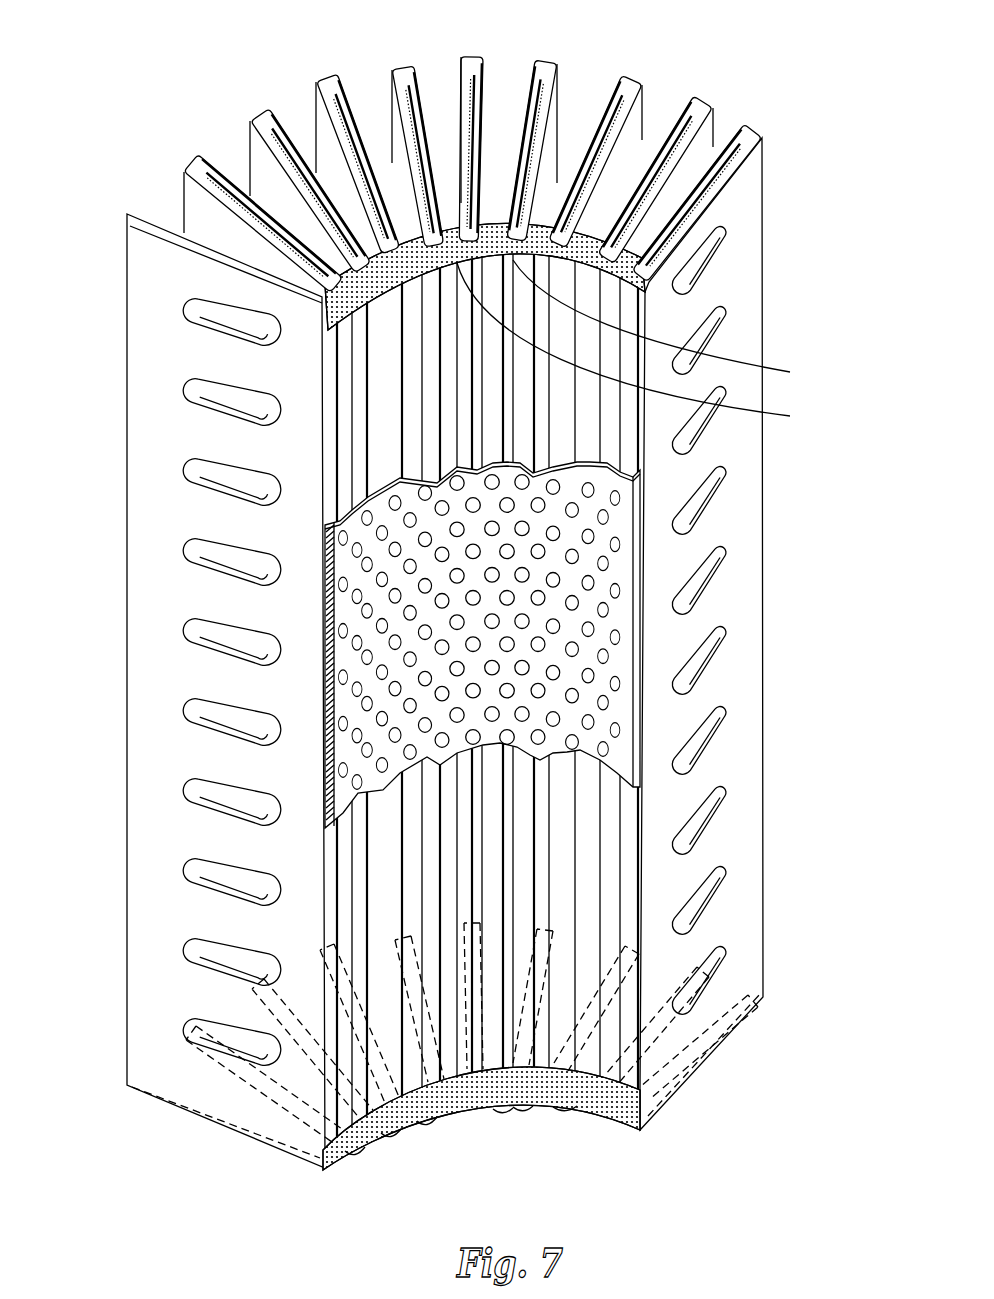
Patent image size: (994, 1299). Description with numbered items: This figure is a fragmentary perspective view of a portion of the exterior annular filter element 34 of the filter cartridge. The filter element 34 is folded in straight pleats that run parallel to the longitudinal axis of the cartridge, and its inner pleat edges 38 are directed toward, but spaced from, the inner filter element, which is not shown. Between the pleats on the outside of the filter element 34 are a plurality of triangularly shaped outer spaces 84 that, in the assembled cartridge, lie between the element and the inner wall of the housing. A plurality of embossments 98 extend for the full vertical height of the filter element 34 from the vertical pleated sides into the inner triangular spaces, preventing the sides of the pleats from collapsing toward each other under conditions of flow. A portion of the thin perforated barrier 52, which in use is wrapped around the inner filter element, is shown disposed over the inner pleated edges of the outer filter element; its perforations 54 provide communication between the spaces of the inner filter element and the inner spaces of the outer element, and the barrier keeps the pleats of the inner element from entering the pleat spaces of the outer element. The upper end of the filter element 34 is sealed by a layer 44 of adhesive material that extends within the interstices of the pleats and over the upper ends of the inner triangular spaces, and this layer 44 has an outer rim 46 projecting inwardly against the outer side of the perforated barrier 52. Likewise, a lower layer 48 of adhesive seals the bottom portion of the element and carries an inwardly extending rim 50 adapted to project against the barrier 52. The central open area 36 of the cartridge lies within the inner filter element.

The exterior annular concentric filter element 34 is at (118, 378).
The central open area 36 is at (545, 60).
The inner pleat edges 38 is at (397, 280).
The layer of adhesive material 44 is at (640, 346).
The outer rim 46 is at (667, 322).
The lower layer of adhesive 48 is at (611, 1110).
The inwardly extending rim 50 is at (583, 1090).
The perforated barrier 52 is at (340, 562).
The perforations 54 is at (350, 674).
The outer spaces 84 is at (298, 117).
The embossments 98 is at (218, 714).